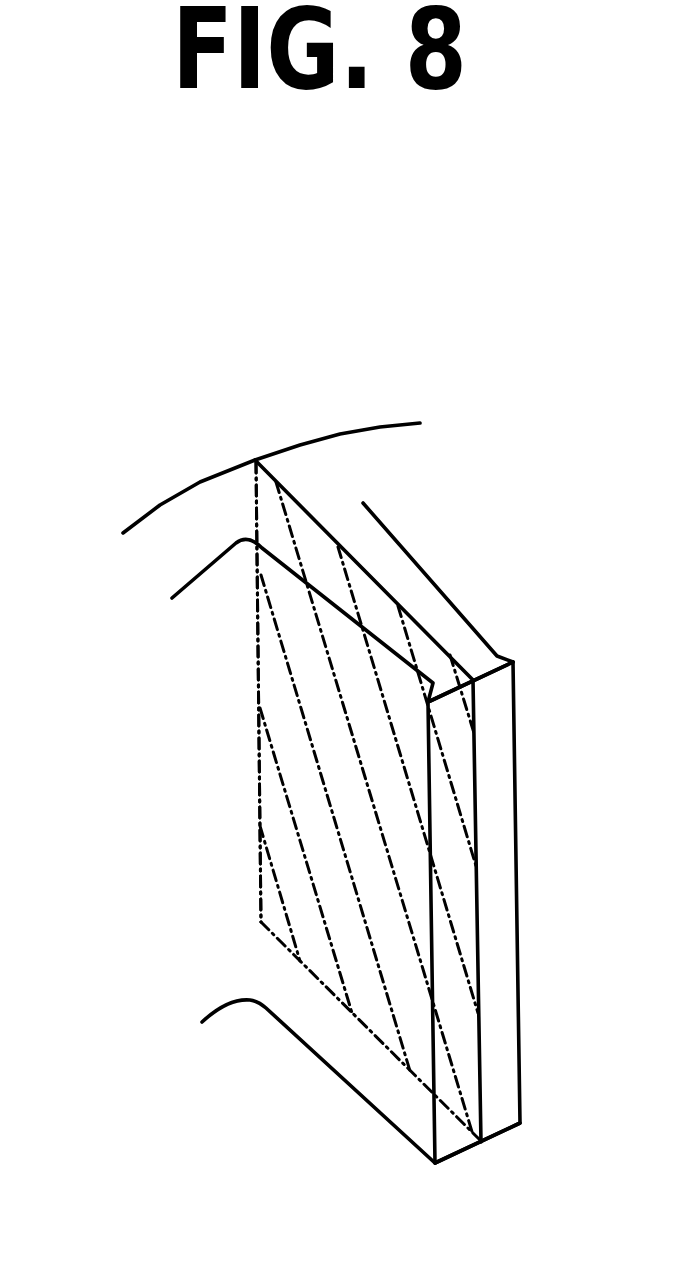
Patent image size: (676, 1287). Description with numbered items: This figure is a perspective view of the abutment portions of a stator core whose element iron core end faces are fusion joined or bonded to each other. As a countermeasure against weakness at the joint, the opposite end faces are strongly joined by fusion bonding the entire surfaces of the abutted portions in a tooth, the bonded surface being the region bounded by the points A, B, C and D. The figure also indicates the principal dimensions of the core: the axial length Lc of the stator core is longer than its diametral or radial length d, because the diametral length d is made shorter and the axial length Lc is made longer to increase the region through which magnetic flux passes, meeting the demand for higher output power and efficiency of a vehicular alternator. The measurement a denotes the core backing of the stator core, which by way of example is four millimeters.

The corner point A of the abutted region A is at (271, 459).
The corner point B of the abutted region B is at (236, 698).
The corner point C of the abutted region C is at (500, 689).
The corner point D of the abutted region D is at (402, 1069).
The core backing measurement a is at (110, 535).
The diametral length d is at (298, 398).
The axial length Lc is at (175, 436).